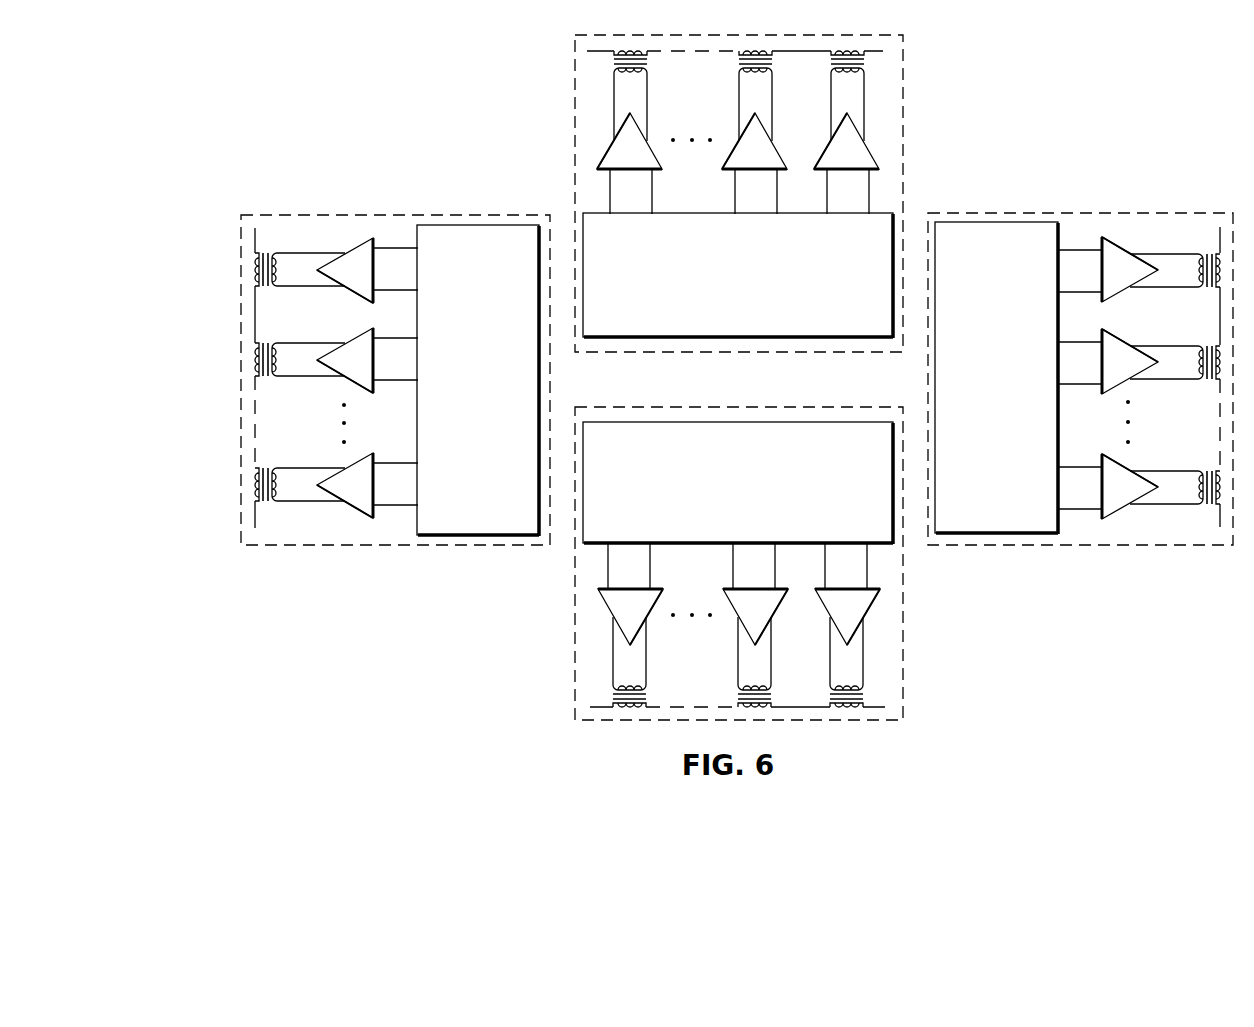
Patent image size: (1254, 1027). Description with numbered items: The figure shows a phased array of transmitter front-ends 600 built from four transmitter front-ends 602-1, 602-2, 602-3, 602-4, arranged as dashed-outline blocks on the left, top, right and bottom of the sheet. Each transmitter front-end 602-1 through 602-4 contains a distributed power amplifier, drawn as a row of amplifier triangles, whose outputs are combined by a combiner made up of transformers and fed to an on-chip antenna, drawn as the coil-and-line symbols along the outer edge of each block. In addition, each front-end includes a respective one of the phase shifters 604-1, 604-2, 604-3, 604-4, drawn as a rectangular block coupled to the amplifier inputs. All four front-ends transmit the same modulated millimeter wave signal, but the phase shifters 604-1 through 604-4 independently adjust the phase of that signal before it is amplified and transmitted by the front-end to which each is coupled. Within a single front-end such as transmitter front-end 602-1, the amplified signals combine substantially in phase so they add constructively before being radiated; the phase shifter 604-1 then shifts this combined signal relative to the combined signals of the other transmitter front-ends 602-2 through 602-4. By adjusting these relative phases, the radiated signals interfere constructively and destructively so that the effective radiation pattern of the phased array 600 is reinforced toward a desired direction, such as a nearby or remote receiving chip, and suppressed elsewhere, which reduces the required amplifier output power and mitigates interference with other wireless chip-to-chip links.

The phased array of transmitter front-ends 600 is at (334, 693).
The transmitter front-end 602-1 is at (400, 214).
The transmitter front-end 602-2 is at (903, 128).
The transmitter front-end 602-3 is at (1083, 546).
The transmitter front-end 602-4 is at (575, 634).
The phase shifter 604-1 is at (478, 380).
The phase shifter 604-2 is at (738, 275).
The phase shifter 604-3 is at (996, 378).
The phase shifter 604-4 is at (738, 483).